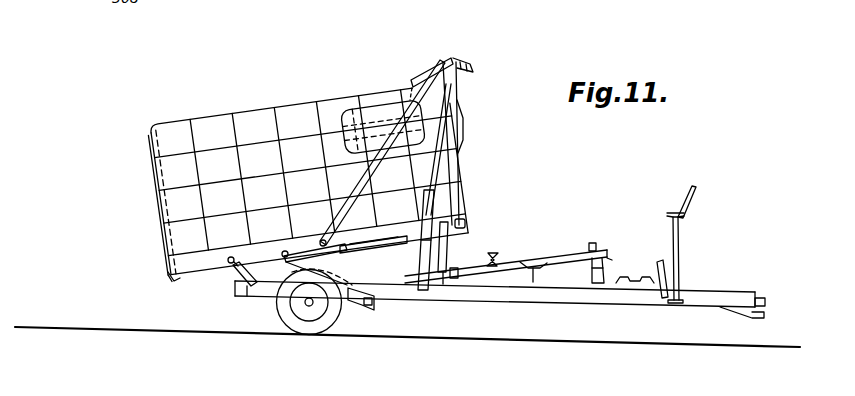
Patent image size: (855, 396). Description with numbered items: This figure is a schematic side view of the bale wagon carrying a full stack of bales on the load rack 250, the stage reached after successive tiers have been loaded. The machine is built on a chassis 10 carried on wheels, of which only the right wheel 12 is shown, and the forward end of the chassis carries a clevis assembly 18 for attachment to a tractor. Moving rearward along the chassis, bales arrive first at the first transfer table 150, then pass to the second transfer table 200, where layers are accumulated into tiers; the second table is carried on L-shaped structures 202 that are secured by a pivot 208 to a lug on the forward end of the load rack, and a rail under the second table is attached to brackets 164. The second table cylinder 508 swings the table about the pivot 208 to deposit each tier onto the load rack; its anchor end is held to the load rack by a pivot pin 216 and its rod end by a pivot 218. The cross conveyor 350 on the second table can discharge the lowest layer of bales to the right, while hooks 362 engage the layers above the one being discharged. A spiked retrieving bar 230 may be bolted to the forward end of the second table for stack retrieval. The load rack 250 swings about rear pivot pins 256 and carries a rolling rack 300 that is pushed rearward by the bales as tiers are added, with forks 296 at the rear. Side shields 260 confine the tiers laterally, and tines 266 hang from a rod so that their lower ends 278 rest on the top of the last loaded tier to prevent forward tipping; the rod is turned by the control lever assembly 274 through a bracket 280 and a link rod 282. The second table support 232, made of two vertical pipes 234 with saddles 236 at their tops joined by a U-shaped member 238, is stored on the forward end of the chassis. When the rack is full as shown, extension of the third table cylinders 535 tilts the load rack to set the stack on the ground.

The chassis 10 is at (512, 307).
The right wheel 12 is at (297, 322).
The clevis assembly 18 is at (760, 296).
The first transfer table 150 is at (637, 274).
The brackets 164 is at (591, 274).
The second transfer table 200 is at (545, 256).
The L-shaped structures 202 is at (455, 280).
The pivot 208 is at (462, 236).
The pivot pin 216 is at (368, 214).
The pivot 218 is at (416, 285).
The spiked retrieving bar 230 is at (600, 240).
The second table support 232 is at (677, 204).
The pipes 234 is at (680, 262).
The saddles 236 is at (668, 214).
The U-shaped member 238 is at (695, 200).
The load rack 250 is at (176, 280).
The pivot pins 256 is at (233, 275).
The side shields 260 is at (360, 113).
The tines 266 is at (432, 64).
The control lever assembly 274 is at (436, 207).
The lower ends of the tines 278 is at (410, 96).
The bracket 280 is at (470, 65).
The rod 282 is at (462, 90).
The forks 296 is at (152, 196).
The rolling rack 300 is at (143, 151).
The cross conveyor 350 is at (496, 252).
The hooks 362 is at (533, 284).
The second table cylinder 508 is at (360, 258).
The third table cylinders 535 is at (357, 306).